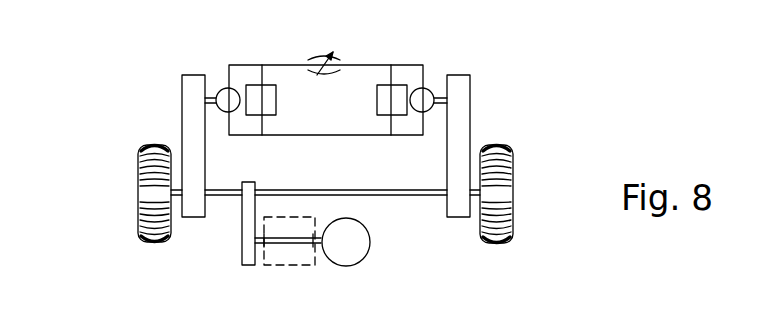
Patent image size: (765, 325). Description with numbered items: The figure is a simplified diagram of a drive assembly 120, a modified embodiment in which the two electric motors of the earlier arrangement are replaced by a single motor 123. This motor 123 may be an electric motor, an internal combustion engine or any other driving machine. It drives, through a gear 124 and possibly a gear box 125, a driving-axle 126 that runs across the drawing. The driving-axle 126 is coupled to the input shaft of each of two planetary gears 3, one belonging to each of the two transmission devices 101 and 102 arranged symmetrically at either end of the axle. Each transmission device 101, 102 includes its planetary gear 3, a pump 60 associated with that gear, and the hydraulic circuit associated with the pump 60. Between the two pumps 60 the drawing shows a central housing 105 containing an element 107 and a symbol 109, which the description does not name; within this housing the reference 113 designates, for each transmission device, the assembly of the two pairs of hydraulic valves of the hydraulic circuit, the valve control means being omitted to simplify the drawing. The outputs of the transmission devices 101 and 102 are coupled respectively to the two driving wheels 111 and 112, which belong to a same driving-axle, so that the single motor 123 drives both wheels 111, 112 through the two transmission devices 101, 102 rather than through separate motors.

The planetary gear 3 is at (188, 105).
The pump 60 is at (226, 94).
The transmission device 101 is at (138, 54).
The transmission device 102 is at (512, 54).
The actuator housing 105 is at (372, 135).
The piston rod 107 is at (375, 65).
The adjustable valve 109 is at (322, 44).
The driving wheel 111 is at (138, 209).
The driving wheel 112 is at (513, 210).
The assembly of two pairs of hydraulic valves 113 is at (377, 95).
The drive assembly 120 is at (562, 112).
The motor 123 is at (345, 258).
The gear 124 is at (247, 222).
The gear box 125 is at (282, 258).
The driving-axle 126 is at (312, 190).